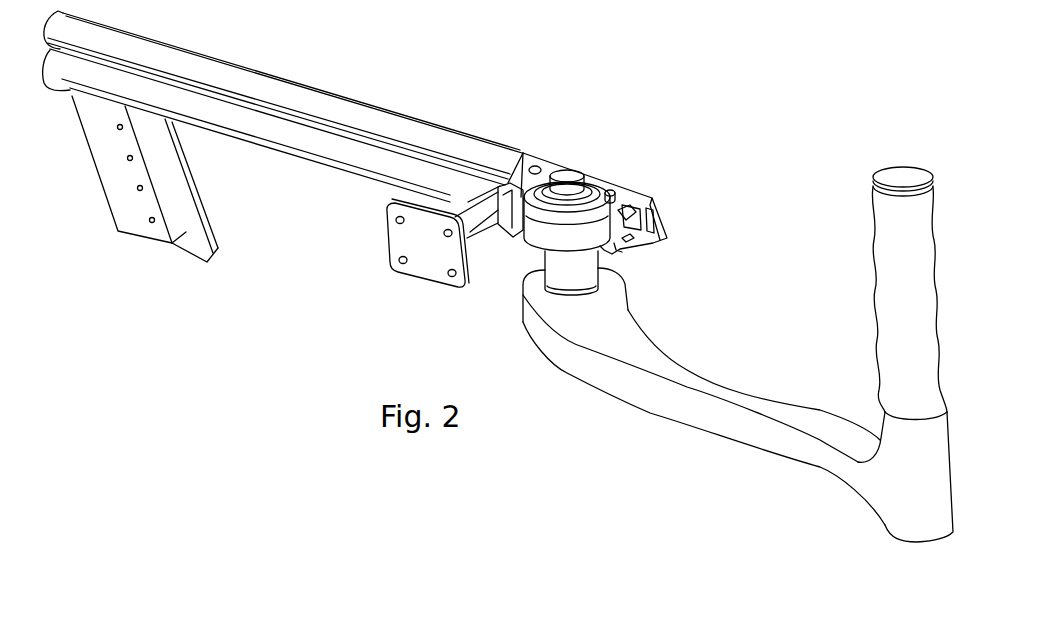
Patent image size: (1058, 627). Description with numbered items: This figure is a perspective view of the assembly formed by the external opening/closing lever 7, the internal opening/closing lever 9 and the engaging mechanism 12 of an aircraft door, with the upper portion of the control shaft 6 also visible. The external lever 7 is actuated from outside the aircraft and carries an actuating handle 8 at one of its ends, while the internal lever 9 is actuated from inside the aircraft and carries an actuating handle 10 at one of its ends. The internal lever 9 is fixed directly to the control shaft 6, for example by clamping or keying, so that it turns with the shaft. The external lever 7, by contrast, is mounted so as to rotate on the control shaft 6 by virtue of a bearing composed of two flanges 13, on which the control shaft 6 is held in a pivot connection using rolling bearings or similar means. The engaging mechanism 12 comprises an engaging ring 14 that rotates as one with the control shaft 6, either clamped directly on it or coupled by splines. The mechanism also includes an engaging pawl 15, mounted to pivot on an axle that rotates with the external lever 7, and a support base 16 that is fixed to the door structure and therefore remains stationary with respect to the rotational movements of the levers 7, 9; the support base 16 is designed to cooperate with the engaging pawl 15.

The control shaft 6 is at (585, 272).
The external opening/closing lever 7 is at (260, 85).
The actuating handle 8 is at (130, 210).
The internal opening/closing lever 9 is at (725, 422).
The actuating handle 10 is at (900, 293).
The engaging mechanism 12 is at (617, 163).
The flanges 13 is at (593, 213).
The engaging ring 14 is at (587, 232).
The engaging pawl 15 is at (513, 202).
The support base 16 is at (472, 292).